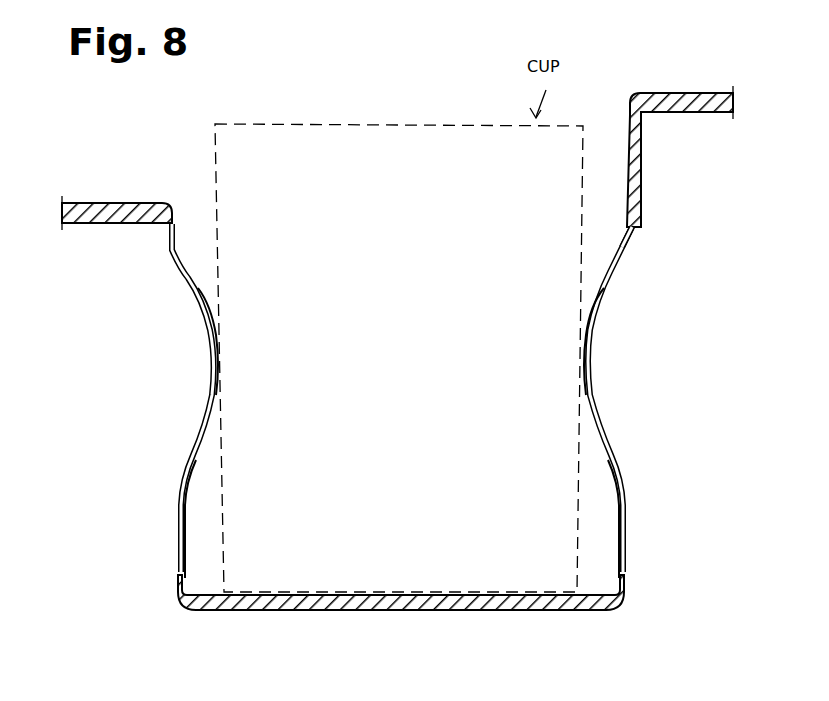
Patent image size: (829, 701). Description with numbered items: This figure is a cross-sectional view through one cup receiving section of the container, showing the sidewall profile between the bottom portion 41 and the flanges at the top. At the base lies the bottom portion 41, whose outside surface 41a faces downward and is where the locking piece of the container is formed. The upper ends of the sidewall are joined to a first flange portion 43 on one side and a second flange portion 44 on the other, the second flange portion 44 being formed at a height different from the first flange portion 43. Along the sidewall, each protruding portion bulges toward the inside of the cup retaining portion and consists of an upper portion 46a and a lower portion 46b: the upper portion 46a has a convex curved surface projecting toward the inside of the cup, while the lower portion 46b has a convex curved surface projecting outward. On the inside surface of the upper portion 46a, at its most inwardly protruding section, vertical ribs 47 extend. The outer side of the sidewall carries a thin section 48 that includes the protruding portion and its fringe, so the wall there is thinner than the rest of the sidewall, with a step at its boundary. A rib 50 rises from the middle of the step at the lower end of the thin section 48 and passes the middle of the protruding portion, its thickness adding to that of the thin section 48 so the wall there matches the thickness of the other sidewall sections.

The bottom portion 41 is at (356, 596).
The outside surface of the bottom portion 41a is at (426, 611).
The first flange portion 43 is at (107, 203).
The second flange portion 44 is at (690, 93).
The upper portion of the protruding portion 46a is at (218, 322).
The lower portion of the protruding portion 46b is at (190, 478).
The rib 47 is at (197, 278).
The thin section 48 is at (168, 246).
The rib 50 is at (203, 345).